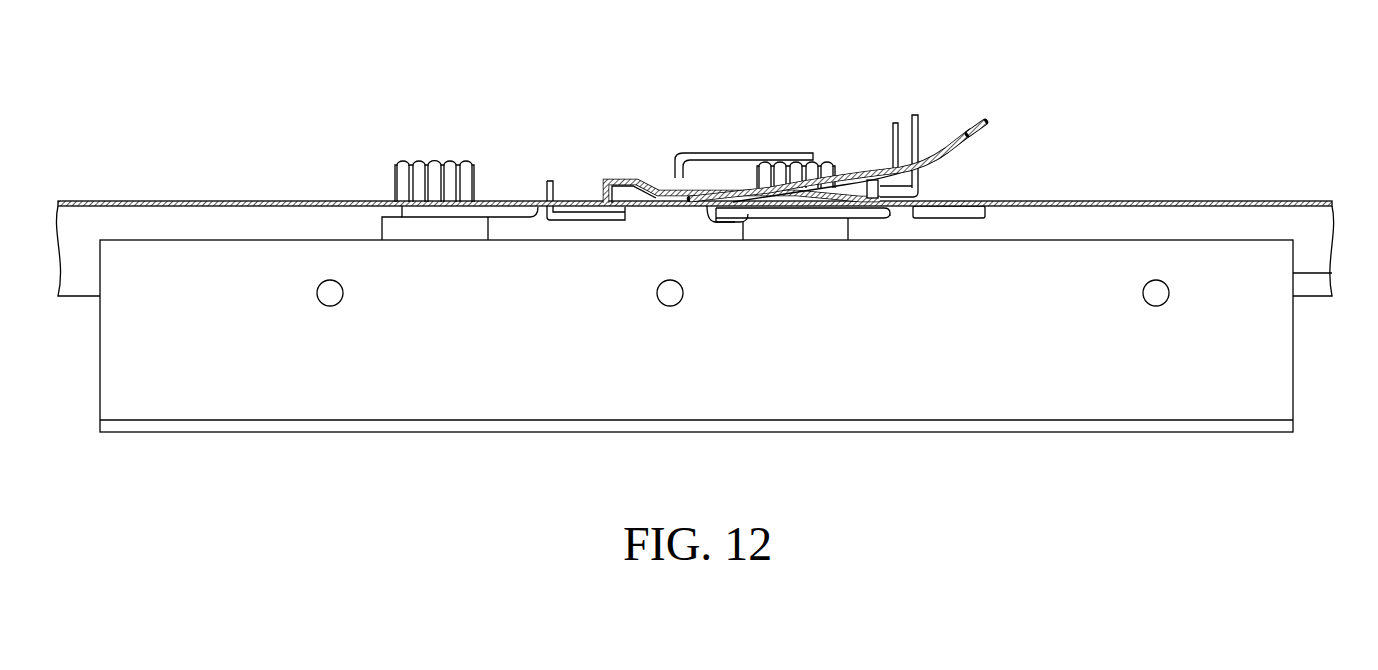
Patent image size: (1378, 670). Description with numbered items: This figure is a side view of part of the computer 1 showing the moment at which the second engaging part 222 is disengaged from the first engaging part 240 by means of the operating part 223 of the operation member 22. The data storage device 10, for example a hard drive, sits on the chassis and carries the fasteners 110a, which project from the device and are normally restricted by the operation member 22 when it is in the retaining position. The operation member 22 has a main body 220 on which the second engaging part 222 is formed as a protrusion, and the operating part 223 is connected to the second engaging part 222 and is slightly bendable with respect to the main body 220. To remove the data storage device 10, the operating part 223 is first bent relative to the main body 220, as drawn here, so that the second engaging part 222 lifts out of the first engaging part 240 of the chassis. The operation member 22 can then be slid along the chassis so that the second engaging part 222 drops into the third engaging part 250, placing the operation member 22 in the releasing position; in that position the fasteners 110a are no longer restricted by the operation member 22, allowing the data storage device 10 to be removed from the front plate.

The computer 1 is at (1206, 46).
The data storage device 10 is at (1268, 378).
The operation member 22 is at (973, 167).
The main body 220 is at (272, 200).
The second engaging part 222 is at (868, 188).
The operating part 223 is at (988, 118).
The first engaging part 240 is at (869, 206).
The third engaging part 250 is at (937, 206).
The fasteners 110a is at (755, 168).